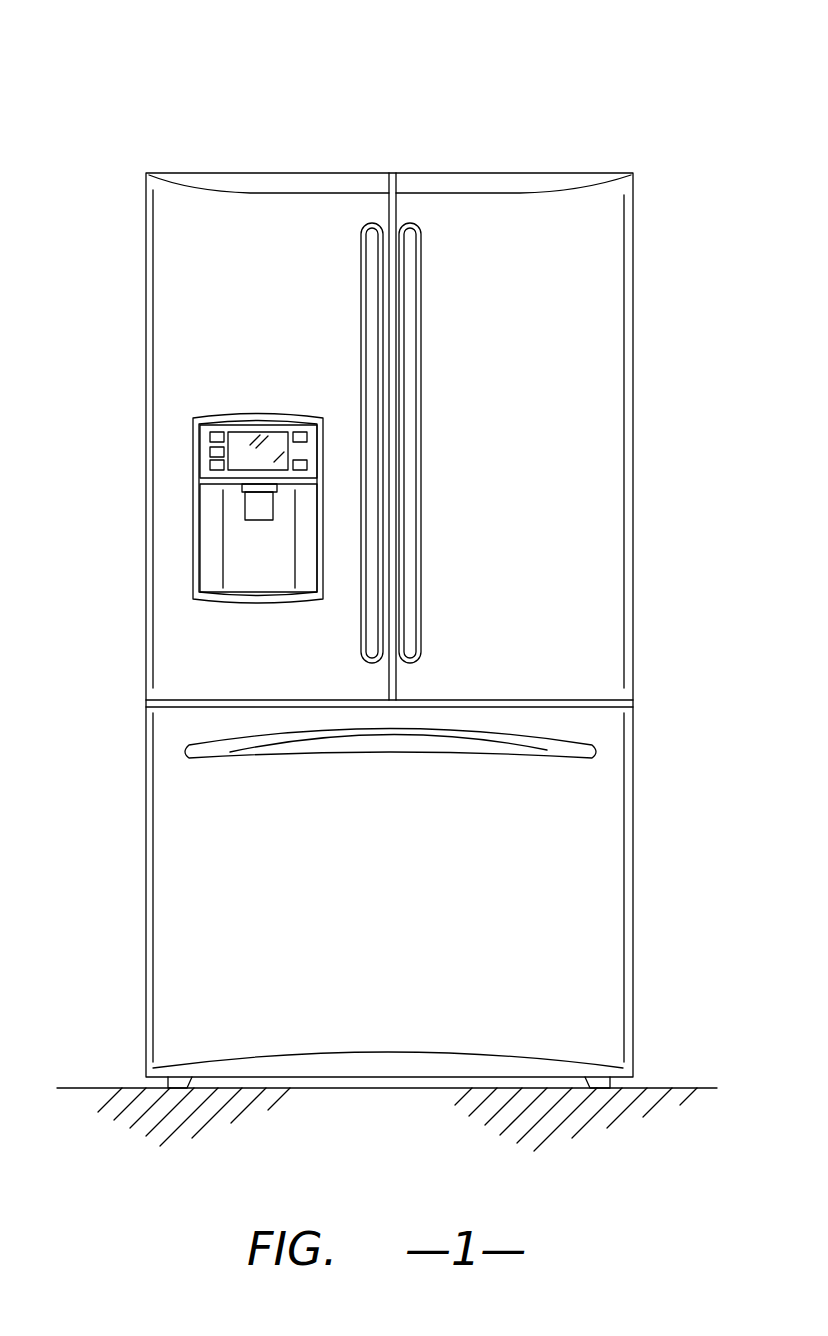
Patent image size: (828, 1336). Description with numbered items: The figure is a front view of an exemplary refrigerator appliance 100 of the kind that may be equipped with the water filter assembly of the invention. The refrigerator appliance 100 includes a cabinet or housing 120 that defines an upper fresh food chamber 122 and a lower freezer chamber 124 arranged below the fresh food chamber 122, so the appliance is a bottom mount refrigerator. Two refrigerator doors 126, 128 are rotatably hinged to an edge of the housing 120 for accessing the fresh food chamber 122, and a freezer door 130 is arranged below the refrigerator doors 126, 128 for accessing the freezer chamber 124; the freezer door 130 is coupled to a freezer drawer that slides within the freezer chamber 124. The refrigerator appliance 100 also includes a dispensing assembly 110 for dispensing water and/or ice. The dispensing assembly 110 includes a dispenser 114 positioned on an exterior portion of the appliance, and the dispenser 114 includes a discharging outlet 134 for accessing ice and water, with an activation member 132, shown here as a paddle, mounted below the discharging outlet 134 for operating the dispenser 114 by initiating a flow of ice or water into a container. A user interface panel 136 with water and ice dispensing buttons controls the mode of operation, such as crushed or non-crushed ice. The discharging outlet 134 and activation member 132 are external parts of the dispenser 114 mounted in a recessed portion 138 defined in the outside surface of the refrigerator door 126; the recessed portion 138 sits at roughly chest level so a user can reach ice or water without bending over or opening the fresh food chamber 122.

The refrigerator appliance 100 is at (614, 84).
The dispensing assembly 110 is at (213, 396).
The dispenser 114 is at (253, 550).
The cabinet or housing 120 is at (138, 900).
The fresh food chamber 122 is at (587, 437).
The freezer chamber 124 is at (586, 832).
The refrigerator door 126 is at (177, 272).
The refrigerator door 128 is at (607, 317).
The freezer door 130 is at (598, 948).
The activation member 132 is at (245, 504).
The discharging outlet 134 is at (257, 502).
The user interface panel 136 is at (208, 442).
The recessed portion 138 is at (278, 568).